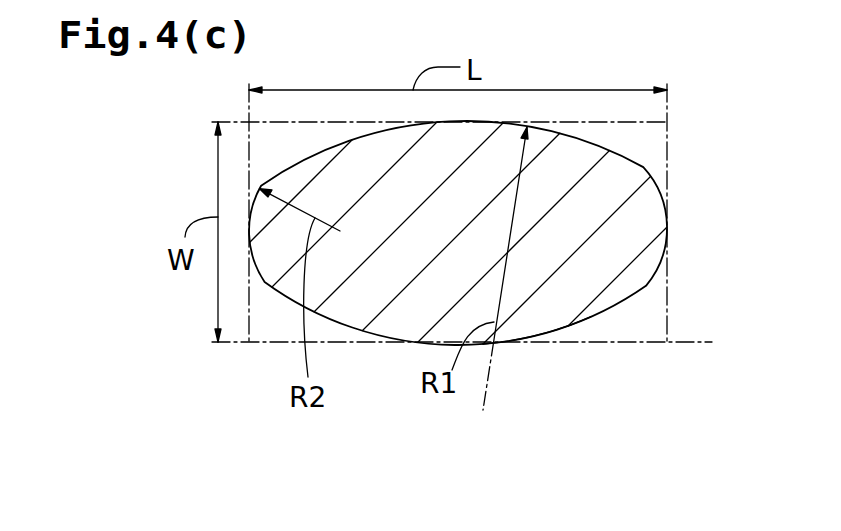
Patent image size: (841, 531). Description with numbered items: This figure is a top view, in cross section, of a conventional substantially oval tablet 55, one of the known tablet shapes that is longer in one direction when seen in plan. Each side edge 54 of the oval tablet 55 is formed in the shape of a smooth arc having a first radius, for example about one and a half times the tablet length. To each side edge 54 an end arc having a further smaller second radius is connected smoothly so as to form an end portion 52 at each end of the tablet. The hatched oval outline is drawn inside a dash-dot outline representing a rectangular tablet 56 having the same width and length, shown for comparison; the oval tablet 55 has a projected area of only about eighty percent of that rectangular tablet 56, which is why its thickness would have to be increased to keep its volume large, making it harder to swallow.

The end portion 52 is at (650, 229).
The side edge 54 is at (530, 341).
The oval tablet 55 is at (732, 108).
The rectangular tablet 56 is at (710, 342).